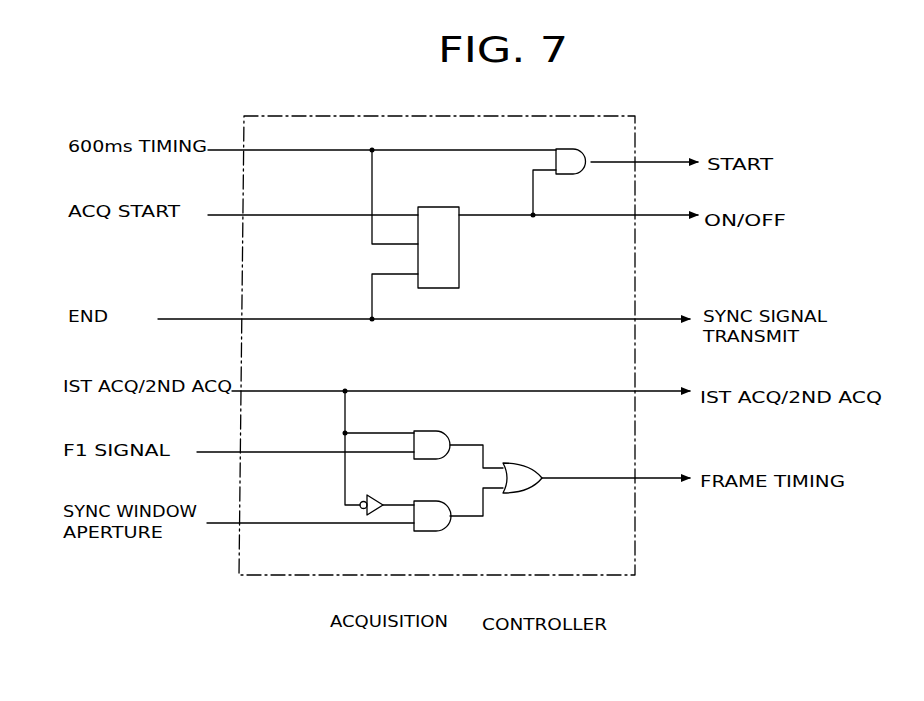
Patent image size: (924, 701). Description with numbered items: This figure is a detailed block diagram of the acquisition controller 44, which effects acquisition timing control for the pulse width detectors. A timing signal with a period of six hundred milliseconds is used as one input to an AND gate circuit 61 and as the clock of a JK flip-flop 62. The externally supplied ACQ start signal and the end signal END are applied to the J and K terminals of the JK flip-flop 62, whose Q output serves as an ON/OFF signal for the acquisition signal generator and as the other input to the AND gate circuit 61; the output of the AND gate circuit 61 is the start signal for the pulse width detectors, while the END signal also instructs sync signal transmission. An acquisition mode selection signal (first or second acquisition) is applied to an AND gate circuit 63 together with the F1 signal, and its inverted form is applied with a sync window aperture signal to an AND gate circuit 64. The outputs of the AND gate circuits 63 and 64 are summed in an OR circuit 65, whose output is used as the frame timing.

The acquisition controller 44 is at (547, 128).
The AND gate circuit 61 is at (571, 149).
The JK flip-flop 62 is at (436, 206).
The AND gate circuit 63 is at (434, 431).
The AND gate circuit 64 is at (430, 501).
The OR circuit 65 is at (522, 464).